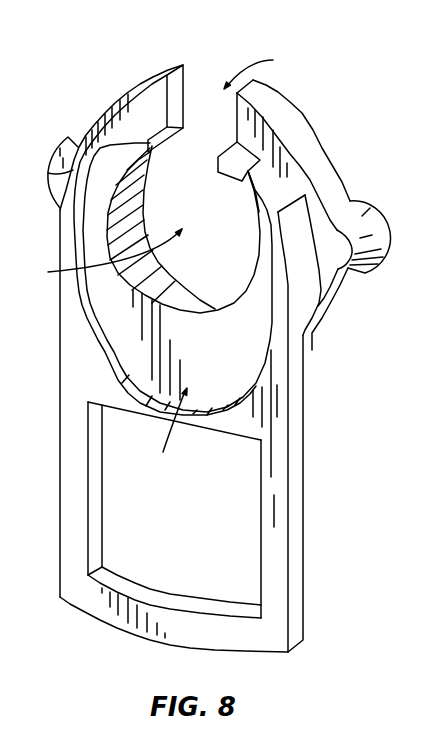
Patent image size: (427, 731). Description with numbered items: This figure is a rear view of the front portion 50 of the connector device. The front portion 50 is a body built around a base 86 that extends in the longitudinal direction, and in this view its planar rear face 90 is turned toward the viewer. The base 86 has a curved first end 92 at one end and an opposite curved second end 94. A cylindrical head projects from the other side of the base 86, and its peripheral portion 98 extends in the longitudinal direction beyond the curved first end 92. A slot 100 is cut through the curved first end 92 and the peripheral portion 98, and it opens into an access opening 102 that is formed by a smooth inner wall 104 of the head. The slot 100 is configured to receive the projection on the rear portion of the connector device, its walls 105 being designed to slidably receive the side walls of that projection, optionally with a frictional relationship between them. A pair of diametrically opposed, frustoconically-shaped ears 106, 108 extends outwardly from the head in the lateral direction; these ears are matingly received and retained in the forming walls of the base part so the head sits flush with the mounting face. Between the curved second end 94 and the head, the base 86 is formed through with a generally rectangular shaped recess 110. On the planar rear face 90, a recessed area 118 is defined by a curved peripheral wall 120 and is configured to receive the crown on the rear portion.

The front portion 50 is at (256, 42).
The base 86 is at (297, 415).
The planar rear face 90 is at (67, 405).
The curved first end 92 is at (278, 212).
The curved second end 94 is at (117, 625).
The peripheral portion 98 is at (273, 105).
The slot 100 is at (263, 66).
The access opening 102 is at (101, 257).
The smooth inner wall 104 is at (180, 267).
The walls 105 is at (180, 92).
The ear 106 is at (68, 137).
The ear 108 is at (372, 205).
The rectangular shaped recess 110 is at (200, 527).
The recessed area 118 is at (115, 323).
The curved peripheral wall 120 is at (168, 434).